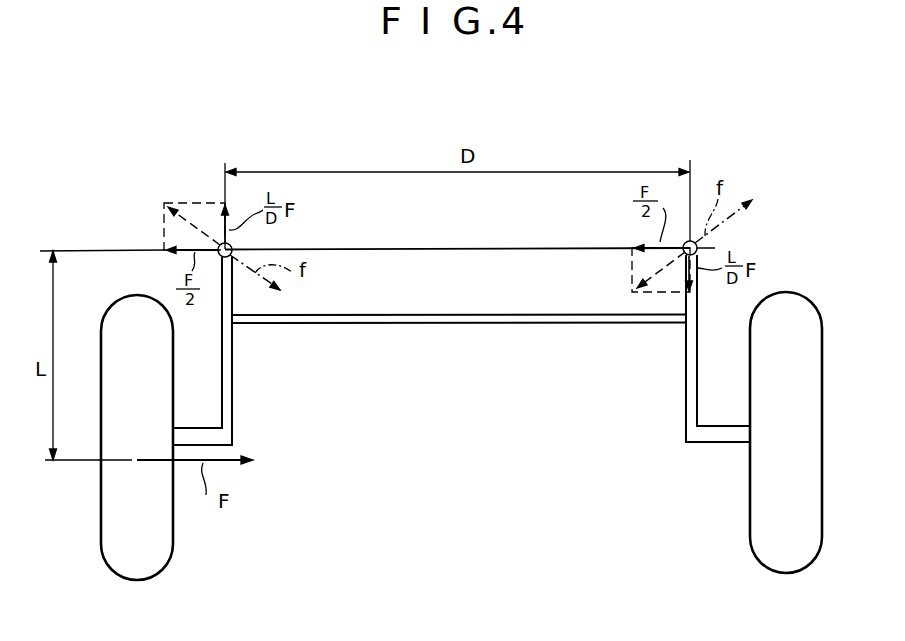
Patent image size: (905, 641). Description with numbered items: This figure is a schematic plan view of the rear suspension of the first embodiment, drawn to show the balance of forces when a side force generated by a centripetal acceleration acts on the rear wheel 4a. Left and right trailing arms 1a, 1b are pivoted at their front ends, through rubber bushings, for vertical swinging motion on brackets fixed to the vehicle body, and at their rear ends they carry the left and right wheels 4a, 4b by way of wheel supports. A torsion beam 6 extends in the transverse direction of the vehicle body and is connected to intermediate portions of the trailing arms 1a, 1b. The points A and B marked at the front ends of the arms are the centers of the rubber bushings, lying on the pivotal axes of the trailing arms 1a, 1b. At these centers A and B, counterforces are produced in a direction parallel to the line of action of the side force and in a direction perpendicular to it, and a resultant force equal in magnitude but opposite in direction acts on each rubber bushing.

The left trailing arm 1a is at (232, 380).
The right trailing arm 1b is at (686, 368).
The left wheel 4a is at (173, 556).
The right wheel 4b is at (752, 556).
The torsion beam 6 is at (445, 315).
The center of the left rubber bushing A is at (232, 246).
The center of the right rubber bushing B is at (697, 243).